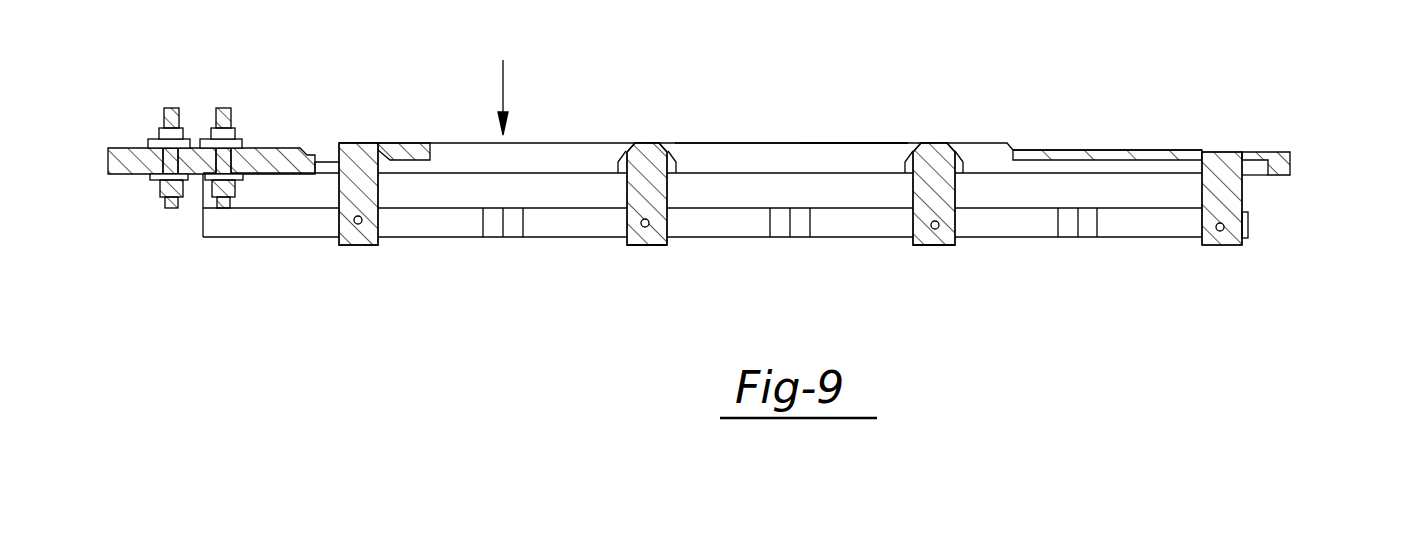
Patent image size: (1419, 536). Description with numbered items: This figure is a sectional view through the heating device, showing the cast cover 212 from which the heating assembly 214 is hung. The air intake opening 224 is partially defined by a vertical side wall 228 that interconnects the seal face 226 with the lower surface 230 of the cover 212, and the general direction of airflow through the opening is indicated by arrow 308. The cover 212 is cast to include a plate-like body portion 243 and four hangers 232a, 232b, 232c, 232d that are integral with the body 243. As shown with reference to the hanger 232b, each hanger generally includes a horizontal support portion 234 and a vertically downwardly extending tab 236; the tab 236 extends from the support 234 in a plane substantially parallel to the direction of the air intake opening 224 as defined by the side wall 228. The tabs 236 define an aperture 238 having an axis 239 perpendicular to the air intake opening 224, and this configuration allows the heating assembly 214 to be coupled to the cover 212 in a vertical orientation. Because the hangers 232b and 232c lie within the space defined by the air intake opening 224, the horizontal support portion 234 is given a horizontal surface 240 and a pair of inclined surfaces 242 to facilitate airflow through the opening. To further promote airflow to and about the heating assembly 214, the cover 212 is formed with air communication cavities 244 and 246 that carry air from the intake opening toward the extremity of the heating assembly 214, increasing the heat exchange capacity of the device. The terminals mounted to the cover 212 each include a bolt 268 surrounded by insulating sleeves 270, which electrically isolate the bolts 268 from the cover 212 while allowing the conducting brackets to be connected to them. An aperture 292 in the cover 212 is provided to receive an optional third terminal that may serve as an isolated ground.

The cover 212 is at (985, 135).
The heating assembly 214 is at (535, 248).
The air intake opening 224 is at (762, 138).
The seal face 226 is at (870, 143).
The vertical side wall 228 is at (457, 143).
The lower surface 230 is at (718, 177).
The hanger 232a is at (355, 252).
The hanger 232b is at (661, 254).
The hanger 232c is at (951, 254).
The hanger 232d is at (1233, 254).
The horizontal support portion 234 is at (653, 147).
The tab 236 is at (628, 200).
The aperture 238 is at (627, 244).
The axis 239 is at (921, 244).
The horizontal surface 240 is at (645, 147).
The inclined surfaces 242 is at (618, 157).
The plate-like body portion 243 is at (1306, 168).
The air communication cavity 244 is at (406, 168).
The air communication cavity 246 is at (1065, 167).
The bolt 268 is at (224, 107).
The insulating sleeves 270 is at (244, 145).
The aperture 292 is at (282, 147).
The arrow 308 is at (503, 75).